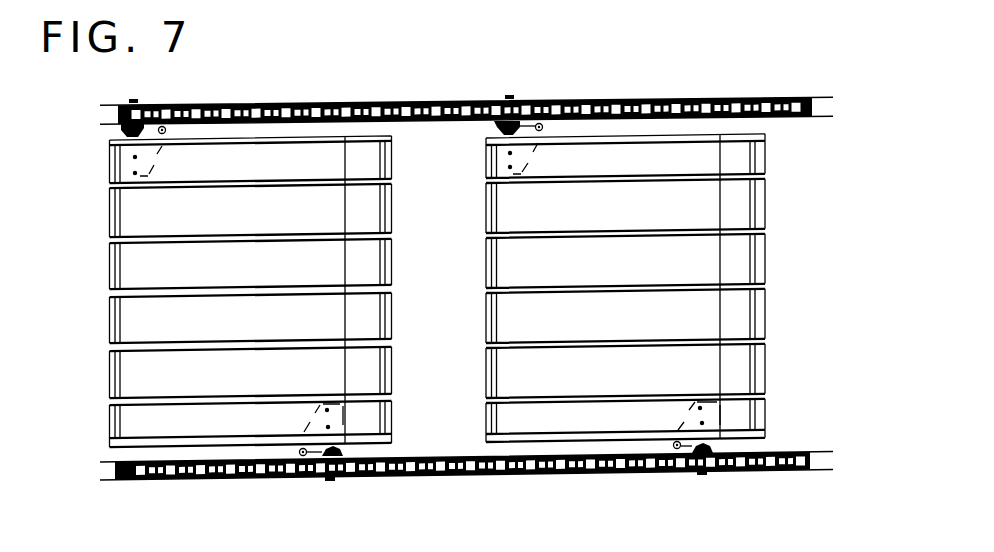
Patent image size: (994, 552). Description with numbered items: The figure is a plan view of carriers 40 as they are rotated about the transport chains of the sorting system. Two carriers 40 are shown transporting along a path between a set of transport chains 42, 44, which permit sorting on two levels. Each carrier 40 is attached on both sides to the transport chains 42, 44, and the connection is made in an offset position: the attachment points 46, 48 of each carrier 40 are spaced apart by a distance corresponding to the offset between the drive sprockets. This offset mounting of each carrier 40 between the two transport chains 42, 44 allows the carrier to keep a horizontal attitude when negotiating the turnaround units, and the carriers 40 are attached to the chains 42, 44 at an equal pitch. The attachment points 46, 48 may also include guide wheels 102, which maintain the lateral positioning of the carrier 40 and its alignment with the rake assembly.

The carrier 40 is at (513, 273).
The transport chain 42 is at (163, 479).
The transport chain 44 is at (270, 108).
The attachment point 46 is at (352, 480).
The attachment point 48 is at (124, 128).
The guide wheel 102 is at (166, 125).